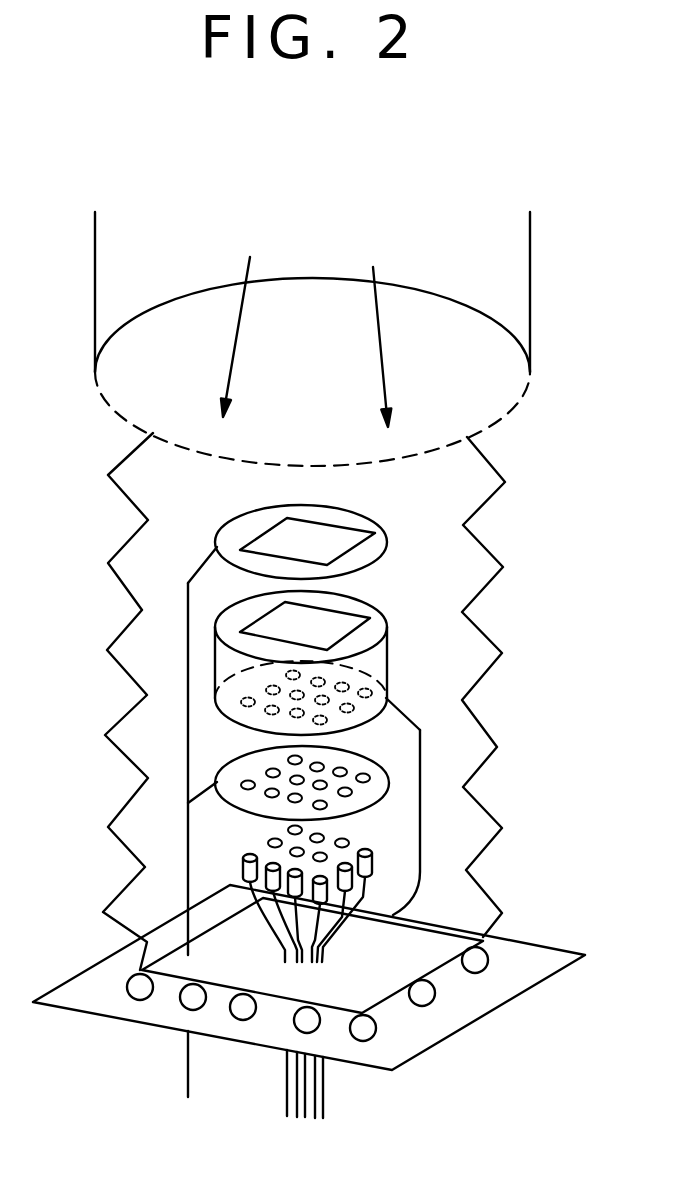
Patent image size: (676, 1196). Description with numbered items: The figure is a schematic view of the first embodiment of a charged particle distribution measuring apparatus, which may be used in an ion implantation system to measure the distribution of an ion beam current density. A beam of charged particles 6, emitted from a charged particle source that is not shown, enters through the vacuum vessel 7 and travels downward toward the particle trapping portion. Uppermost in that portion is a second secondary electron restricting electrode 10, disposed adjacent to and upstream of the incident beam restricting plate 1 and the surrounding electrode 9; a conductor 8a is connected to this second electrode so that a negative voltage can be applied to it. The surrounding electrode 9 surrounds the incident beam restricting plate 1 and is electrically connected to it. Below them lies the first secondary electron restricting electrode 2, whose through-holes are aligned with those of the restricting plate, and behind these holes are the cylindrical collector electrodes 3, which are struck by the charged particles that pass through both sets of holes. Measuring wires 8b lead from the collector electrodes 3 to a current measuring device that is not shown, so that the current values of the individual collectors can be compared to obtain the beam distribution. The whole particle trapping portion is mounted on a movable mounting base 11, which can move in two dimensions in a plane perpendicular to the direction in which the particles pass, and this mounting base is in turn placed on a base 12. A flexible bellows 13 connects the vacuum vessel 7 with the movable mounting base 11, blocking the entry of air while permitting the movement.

The incident beam restricting plate 1 is at (388, 700).
The secondary electron restricting electrode 2 is at (378, 783).
The collector electrodes 3 is at (375, 863).
The beam of charged particles 6 is at (383, 343).
The vacuum vessel 7 is at (530, 345).
The conductor 8a is at (187, 845).
The measuring wires 8b is at (326, 1101).
The surrounding electrode 9 is at (388, 657).
The second secondary electron restricting electrode 10 is at (372, 549).
The movable mounting base 11 is at (438, 945).
The base 12 is at (467, 1003).
The flexible bellows 13 is at (120, 548).